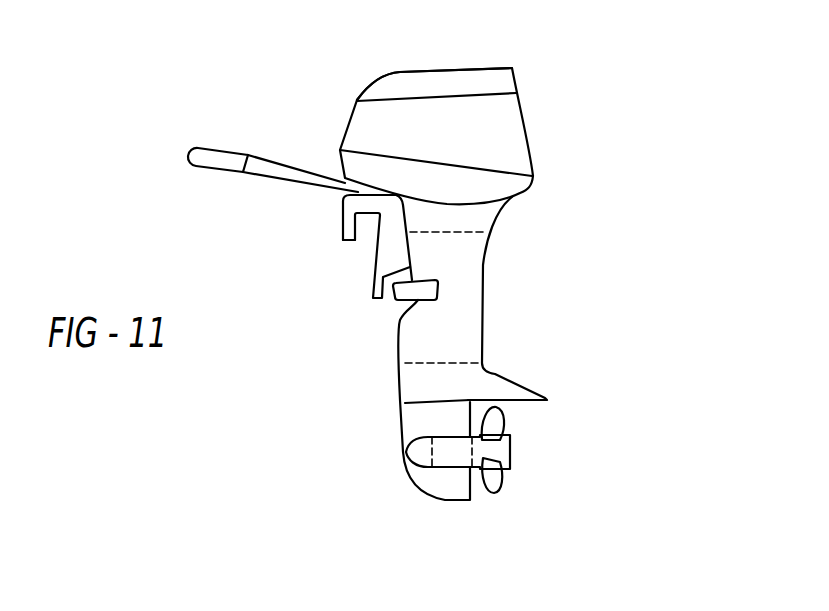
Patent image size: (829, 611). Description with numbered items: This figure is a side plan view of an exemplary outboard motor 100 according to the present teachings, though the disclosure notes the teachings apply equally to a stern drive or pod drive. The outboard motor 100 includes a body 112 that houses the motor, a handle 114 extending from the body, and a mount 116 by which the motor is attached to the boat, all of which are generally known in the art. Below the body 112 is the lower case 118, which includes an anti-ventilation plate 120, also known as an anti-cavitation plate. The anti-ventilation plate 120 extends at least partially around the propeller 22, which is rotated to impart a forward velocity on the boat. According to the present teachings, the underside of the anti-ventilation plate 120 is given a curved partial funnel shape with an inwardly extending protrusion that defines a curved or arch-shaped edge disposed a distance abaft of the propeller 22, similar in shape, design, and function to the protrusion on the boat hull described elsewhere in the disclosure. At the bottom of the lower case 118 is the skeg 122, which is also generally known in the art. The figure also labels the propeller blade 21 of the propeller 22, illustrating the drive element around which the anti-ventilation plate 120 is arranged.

The outboard motor 100 is at (578, 162).
The body 112 is at (442, 120).
The handle 114 is at (227, 160).
The mount 116 is at (330, 232).
The lower case 118 is at (504, 335).
The anti-ventilation plate 120 is at (527, 390).
The skeg 122 is at (445, 480).
The propeller 22 is at (537, 464).
The propeller blade 21 is at (495, 480).